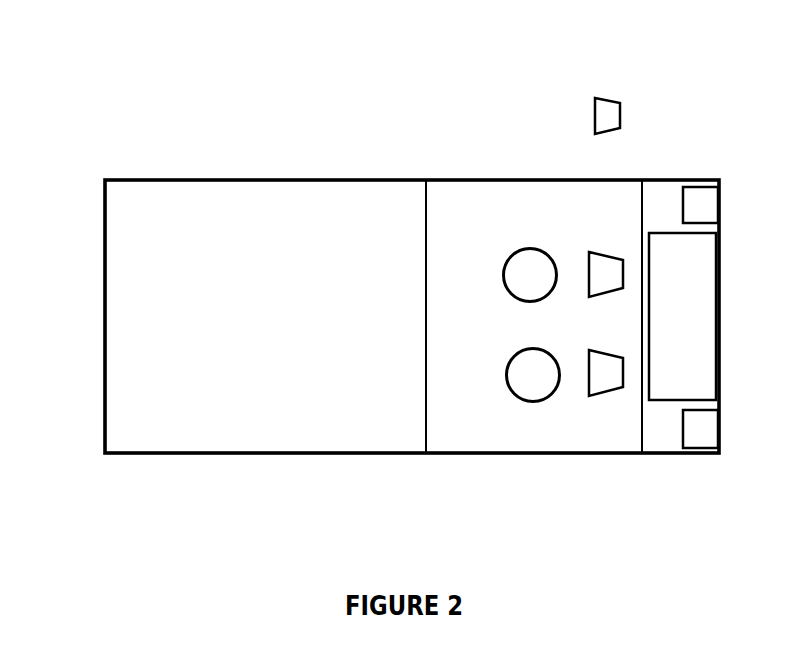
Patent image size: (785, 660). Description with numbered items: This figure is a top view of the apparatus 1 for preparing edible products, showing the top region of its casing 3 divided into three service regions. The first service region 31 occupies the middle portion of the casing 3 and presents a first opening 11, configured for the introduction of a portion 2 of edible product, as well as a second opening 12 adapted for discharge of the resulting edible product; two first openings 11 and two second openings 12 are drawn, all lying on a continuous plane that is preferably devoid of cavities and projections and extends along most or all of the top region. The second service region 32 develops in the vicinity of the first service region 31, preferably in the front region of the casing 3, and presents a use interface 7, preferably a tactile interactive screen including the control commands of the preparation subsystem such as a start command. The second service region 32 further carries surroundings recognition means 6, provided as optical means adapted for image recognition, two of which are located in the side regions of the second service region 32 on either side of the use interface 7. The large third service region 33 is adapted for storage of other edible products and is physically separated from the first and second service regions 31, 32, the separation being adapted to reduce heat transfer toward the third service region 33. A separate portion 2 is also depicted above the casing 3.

The apparatus 1 is at (39, 52).
The portion 2 is at (612, 102).
The casing 3 is at (383, 298).
The surroundings recognition means 6 is at (717, 317).
The use interface 7 is at (682, 316).
The first opening 11 is at (601, 308).
The second opening 12 is at (532, 311).
The first service region 31 is at (552, 299).
The second service region 32 is at (667, 298).
The third service region 33 is at (270, 298).